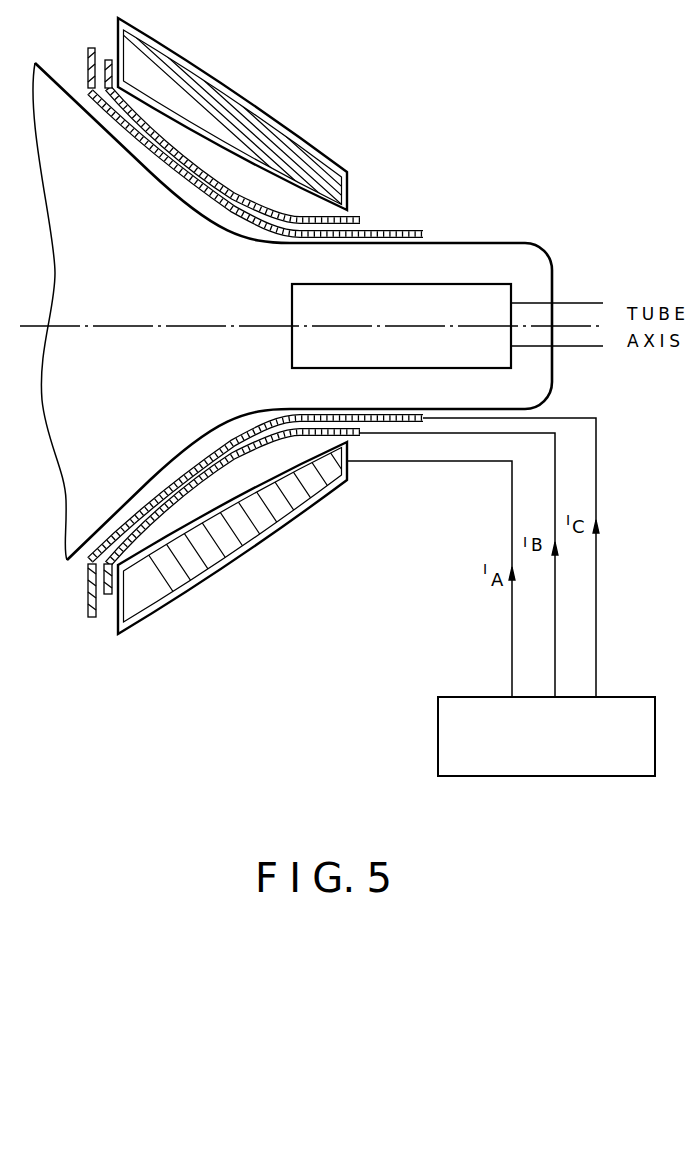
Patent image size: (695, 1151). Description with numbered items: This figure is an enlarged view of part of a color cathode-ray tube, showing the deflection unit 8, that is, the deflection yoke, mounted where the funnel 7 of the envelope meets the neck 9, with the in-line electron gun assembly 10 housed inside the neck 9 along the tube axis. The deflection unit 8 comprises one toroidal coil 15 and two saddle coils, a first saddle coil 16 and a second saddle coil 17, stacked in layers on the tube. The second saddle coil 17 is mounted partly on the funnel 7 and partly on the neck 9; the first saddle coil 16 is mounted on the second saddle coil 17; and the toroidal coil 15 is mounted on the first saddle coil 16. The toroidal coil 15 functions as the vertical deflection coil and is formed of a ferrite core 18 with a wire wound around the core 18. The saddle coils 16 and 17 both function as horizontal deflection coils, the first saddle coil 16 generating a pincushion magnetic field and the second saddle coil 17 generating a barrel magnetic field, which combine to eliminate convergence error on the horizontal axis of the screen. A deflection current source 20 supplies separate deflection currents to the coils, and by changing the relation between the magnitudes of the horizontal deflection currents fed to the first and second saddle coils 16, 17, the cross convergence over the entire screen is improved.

The funnel 7 is at (143, 488).
The deflection unit 8 is at (266, 75).
The neck 9 is at (537, 243).
The in-line electron gun assembly 10 is at (473, 284).
The toroidal coil 15 is at (295, 147).
The first saddle coil 16 is at (361, 218).
The second saddle coil 17 is at (417, 228).
The ferrite core 18 is at (194, 82).
The deflection current source 20 is at (438, 740).